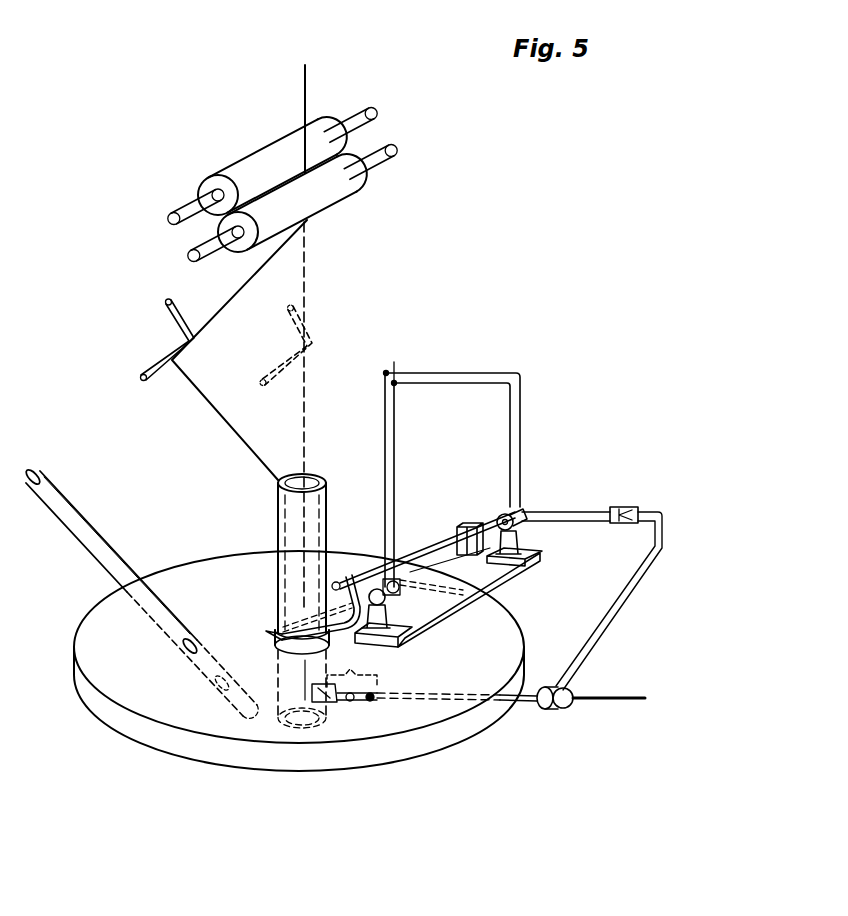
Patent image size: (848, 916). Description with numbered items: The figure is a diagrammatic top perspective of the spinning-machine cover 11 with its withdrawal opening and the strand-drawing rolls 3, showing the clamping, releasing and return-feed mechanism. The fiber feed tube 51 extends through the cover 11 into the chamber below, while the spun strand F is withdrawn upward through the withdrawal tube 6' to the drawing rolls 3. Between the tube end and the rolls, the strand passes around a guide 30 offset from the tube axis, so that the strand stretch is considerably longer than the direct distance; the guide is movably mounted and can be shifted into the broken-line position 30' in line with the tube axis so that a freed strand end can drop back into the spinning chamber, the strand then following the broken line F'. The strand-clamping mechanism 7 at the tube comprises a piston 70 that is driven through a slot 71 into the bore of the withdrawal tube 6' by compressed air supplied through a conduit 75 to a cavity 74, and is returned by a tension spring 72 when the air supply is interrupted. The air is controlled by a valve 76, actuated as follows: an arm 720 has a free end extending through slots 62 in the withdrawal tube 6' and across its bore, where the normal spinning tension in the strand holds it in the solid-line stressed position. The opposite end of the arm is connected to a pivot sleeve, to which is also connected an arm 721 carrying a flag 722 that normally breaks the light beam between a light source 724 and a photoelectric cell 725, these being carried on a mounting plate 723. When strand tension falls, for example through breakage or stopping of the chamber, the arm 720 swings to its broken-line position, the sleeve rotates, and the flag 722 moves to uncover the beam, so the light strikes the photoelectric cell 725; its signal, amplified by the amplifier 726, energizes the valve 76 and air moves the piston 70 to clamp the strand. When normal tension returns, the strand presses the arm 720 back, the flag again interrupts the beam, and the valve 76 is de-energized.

The drawing rolls 3 is at (343, 188).
The strand F is at (239, 272).
The strand in broken-line position F' is at (322, 416).
The guide 30 is at (147, 334).
The broken-line position of guide 30' is at (327, 337).
The cover 11 is at (145, 700).
The feed tube 51 is at (90, 538).
The withdrawal tube 6' is at (277, 601).
The slots 62 is at (278, 640).
The strand-clamping mechanism 7 is at (357, 670).
The piston 70 is at (332, 697).
The slot 71 is at (320, 682).
The tension spring 72 is at (370, 700).
The cavity 74 is at (350, 702).
The conduit 75 is at (510, 703).
The valve 76 is at (560, 710).
The arm 720 is at (348, 565).
The arm 721 is at (397, 555).
The flag 722 is at (467, 523).
The mounting plate 723 is at (455, 588).
The light source 724 is at (398, 602).
The photoelectric cell 725 is at (522, 510).
The amplifier 726 is at (617, 508).